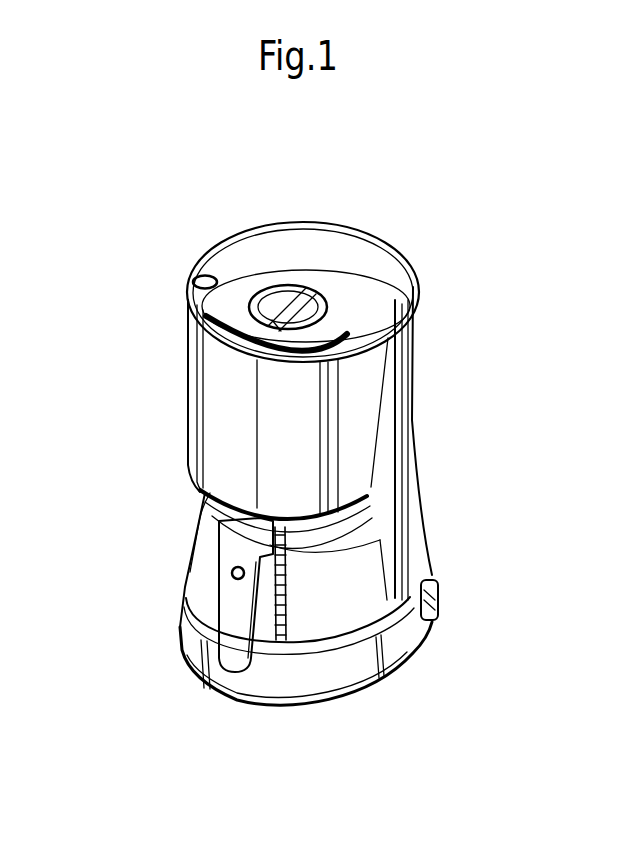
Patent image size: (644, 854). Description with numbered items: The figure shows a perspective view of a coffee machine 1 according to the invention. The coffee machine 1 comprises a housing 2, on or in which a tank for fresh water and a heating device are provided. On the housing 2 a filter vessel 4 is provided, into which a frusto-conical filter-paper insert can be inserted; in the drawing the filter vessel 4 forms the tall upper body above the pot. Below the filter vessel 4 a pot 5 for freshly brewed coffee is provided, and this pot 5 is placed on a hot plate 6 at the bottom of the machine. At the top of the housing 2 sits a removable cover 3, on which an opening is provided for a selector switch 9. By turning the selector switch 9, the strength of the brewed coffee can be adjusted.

The coffee machine 1 is at (460, 265).
The housing 2 is at (413, 508).
The removable cover 3 is at (317, 337).
The filter vessel 4 is at (253, 407).
The pot 5 is at (327, 595).
The hot plate 6 is at (287, 677).
The selector switch 9 is at (273, 297).